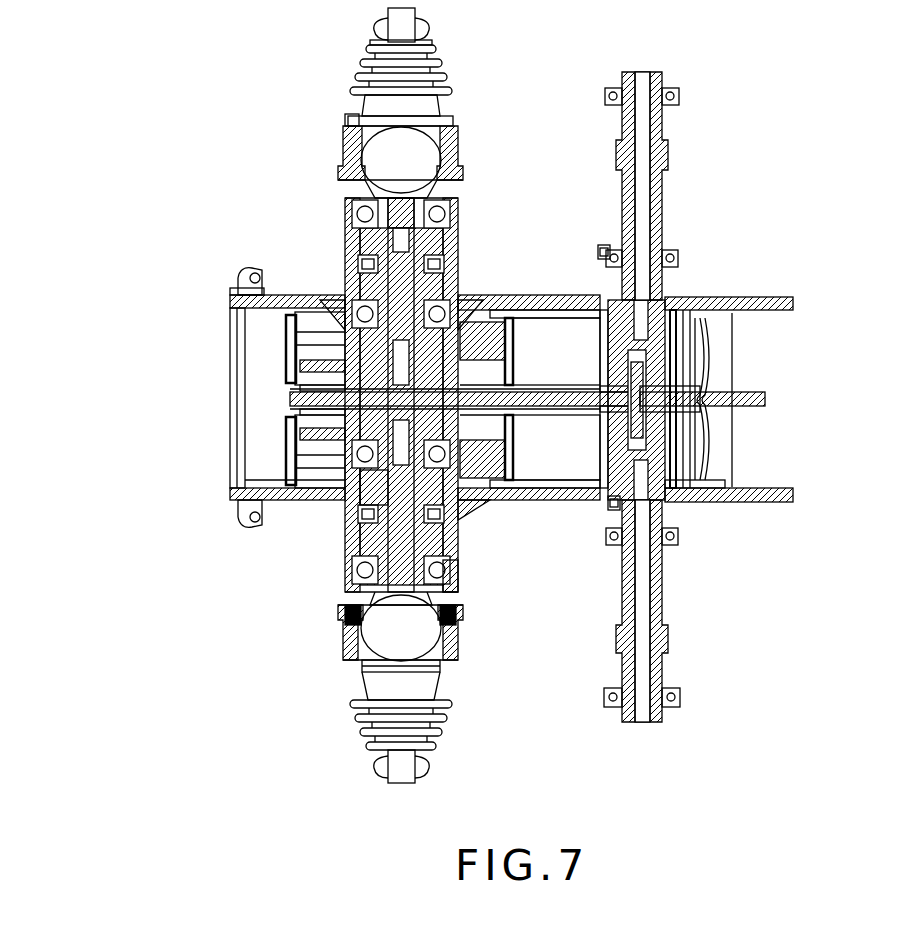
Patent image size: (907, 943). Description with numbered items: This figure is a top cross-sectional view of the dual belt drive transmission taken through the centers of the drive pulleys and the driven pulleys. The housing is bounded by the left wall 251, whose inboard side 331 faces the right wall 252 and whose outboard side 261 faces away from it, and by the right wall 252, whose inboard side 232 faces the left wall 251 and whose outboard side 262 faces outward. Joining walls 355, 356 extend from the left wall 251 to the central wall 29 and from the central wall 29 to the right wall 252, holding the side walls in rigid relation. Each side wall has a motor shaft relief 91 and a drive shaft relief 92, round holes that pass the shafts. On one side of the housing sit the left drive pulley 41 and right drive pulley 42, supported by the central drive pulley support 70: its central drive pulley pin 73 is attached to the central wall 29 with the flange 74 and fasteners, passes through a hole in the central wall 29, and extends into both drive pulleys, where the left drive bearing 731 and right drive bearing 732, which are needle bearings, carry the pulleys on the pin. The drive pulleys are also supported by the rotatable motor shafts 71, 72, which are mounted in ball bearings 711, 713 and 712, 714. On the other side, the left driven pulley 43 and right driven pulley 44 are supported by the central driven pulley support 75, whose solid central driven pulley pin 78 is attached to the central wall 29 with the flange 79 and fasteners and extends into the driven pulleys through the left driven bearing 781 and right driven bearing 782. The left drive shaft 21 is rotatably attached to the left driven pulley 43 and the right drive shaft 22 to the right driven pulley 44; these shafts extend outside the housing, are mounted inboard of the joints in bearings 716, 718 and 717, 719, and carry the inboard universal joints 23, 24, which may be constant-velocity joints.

The left drive shaft 21 is at (426, 154).
The right drive shaft 22 is at (426, 635).
The inboard universal joint 23 is at (422, 62).
The inboard universal joint 24 is at (422, 721).
The central wall 29 is at (477, 402).
The left drive pulley 41 is at (729, 274).
The right drive pulley 42 is at (729, 524).
The left driven pulley 43 is at (530, 321).
The right driven pulley 44 is at (530, 470).
The central drive pulley support 70 is at (727, 400).
The motor shaft 71 is at (687, 186).
The motor shaft 72 is at (694, 611).
The central drive pulley pin 73 is at (787, 399).
The flange 74 is at (769, 399).
The central driven pulley support 75 is at (366, 395).
The central driven pulley pin 78 is at (300, 531).
The flange 79 is at (211, 430).
The motor shaft relief 91 is at (646, 391).
The drive shaft relief 92 is at (331, 412).
The inboard side 232 is at (781, 469).
The left wall 251 is at (545, 273).
The right wall 252 is at (533, 446).
The outboard side 261 is at (529, 252).
The outboard side 262 is at (547, 416).
The inboard side 331 is at (776, 389).
The joining wall 355 is at (216, 391).
The joining wall 356 is at (214, 510).
The bearing 711 is at (683, 227).
The bearing 712 is at (696, 563).
The bearing 713 is at (685, 81).
The bearing 714 is at (695, 694).
The bearing 716 is at (324, 273).
The bearing 717 is at (504, 553).
The bearing 718 is at (336, 363).
The bearing 719 is at (492, 599).
The left drive bearing 731 is at (797, 395).
The right drive bearing 732 is at (799, 399).
The left driven bearing 781 is at (215, 348).
The right driven bearing 782 is at (196, 460).